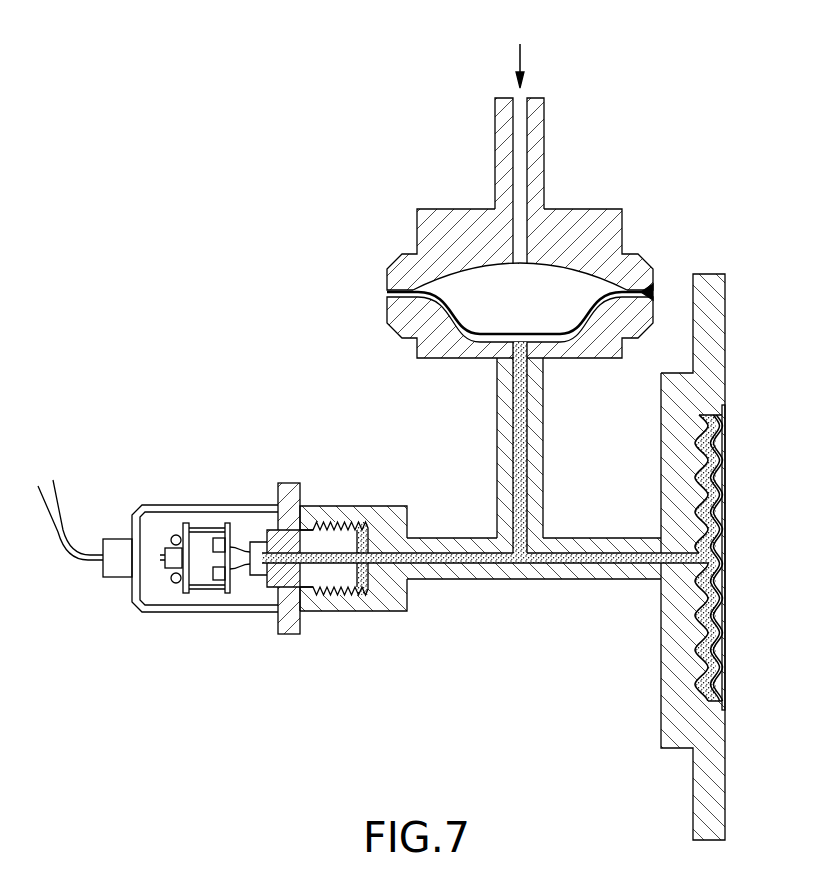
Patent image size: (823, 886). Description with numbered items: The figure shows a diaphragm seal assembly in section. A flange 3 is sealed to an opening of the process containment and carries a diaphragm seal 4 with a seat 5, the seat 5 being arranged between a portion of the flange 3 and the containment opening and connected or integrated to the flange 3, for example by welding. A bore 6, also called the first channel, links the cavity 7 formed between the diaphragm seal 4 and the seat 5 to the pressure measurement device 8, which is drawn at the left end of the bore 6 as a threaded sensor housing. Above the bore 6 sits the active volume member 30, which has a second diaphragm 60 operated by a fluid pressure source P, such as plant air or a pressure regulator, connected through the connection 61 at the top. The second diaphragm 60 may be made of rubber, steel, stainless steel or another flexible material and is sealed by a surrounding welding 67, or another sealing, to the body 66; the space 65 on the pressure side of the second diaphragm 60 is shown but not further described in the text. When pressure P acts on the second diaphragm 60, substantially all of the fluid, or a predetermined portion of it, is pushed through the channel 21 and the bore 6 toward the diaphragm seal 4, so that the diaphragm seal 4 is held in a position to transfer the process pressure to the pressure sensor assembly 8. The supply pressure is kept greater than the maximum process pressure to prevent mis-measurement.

The flange 3 is at (687, 723).
The diaphragm seal 4 is at (724, 580).
The seat 5 is at (698, 616).
The bore 6 is at (583, 560).
The cavity 7 is at (708, 557).
The pressure measurement device 8 is at (256, 657).
The channel 21 is at (518, 477).
The active volume member 30 is at (463, 217).
The second diaphragm 60 is at (495, 328).
The connection 61 is at (546, 146).
The chamber 65 is at (571, 290).
The body 66 is at (448, 346).
The surrounded welding 67 is at (388, 283).